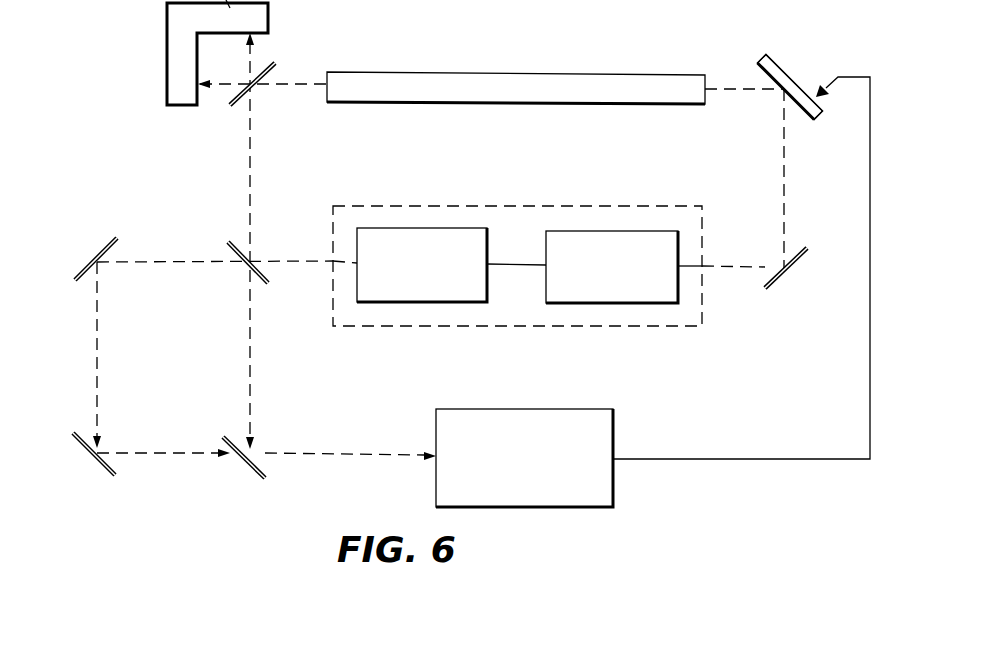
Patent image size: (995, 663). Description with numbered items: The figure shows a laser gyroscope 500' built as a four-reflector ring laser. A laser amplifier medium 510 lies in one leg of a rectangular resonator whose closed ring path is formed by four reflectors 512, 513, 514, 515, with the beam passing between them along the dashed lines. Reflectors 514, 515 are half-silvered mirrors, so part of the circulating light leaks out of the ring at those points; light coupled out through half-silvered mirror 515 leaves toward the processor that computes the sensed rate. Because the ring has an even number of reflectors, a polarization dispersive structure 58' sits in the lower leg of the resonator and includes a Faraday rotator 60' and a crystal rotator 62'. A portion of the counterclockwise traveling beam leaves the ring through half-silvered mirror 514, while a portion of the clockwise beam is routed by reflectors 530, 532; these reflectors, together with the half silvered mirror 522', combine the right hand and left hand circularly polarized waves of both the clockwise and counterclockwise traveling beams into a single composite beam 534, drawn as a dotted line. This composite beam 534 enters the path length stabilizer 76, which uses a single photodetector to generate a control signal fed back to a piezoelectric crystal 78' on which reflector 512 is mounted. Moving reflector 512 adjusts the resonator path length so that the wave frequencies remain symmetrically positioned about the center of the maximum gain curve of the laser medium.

The laser gyroscope 500' is at (438, 245).
The laser amplifier medium 510 is at (392, 72).
The reflector 512 is at (762, 68).
The piezoelectric crystal 78' is at (789, 69).
The reflector 513 is at (782, 272).
The reflector 514 is at (228, 243).
The reflector 515 is at (258, 80).
The reflector 530 is at (76, 275).
The reflector 532 is at (100, 462).
The half silvered mirror 522' is at (232, 466).
The composite beam 534 is at (313, 452).
The polarization dispersive structure 58' is at (517, 281).
The Faraday rotator 60' is at (422, 254).
The crystal rotator 62' is at (612, 257).
The path length stabilizer 76 is at (563, 410).